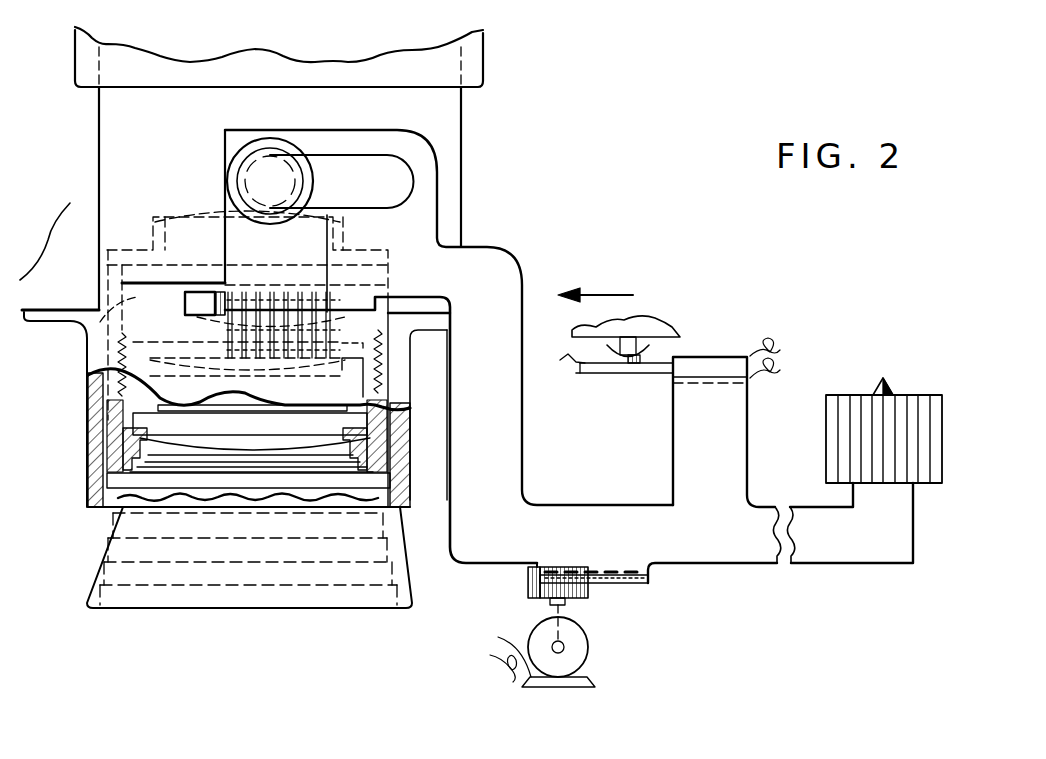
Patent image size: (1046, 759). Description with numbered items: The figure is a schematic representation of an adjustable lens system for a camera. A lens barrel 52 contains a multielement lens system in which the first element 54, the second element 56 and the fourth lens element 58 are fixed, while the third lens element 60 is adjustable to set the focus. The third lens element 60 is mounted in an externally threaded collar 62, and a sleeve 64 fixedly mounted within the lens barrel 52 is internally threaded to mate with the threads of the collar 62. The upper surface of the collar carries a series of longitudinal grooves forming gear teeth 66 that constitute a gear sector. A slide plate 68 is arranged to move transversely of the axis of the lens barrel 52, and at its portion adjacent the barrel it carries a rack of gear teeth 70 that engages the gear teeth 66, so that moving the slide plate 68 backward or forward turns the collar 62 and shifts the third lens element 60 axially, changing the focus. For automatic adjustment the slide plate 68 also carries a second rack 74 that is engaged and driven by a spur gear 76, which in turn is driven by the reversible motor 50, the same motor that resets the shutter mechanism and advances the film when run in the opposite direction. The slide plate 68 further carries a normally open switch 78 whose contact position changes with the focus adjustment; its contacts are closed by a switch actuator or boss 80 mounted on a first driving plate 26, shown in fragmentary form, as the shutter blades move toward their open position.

The first driving plate 26 is at (655, 325).
The motor 50 is at (589, 650).
The lens barrel 52 is at (88, 506).
The first element 54 is at (312, 446).
The second element 56 is at (388, 385).
The fourth lens element 58 is at (205, 226).
The third lens element 60 is at (208, 318).
The collar 62 is at (88, 336).
The sleeve 64 is at (105, 402).
The gear teeth 66 is at (290, 340).
The slide plate 68 is at (487, 247).
The rack of gear teeth 70 is at (372, 305).
The second rack 74 is at (642, 584).
The spur gear 76 is at (530, 596).
The normally open switch 78 is at (600, 374).
The switch actuator or boss 80 is at (660, 352).